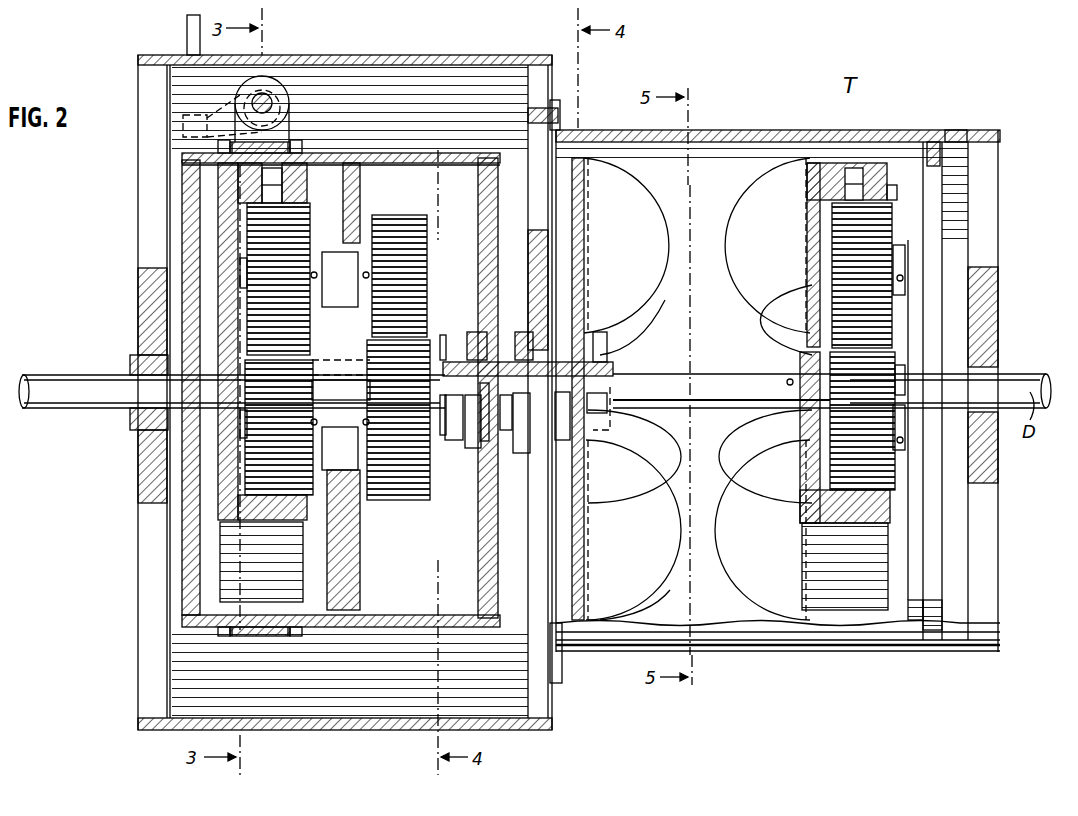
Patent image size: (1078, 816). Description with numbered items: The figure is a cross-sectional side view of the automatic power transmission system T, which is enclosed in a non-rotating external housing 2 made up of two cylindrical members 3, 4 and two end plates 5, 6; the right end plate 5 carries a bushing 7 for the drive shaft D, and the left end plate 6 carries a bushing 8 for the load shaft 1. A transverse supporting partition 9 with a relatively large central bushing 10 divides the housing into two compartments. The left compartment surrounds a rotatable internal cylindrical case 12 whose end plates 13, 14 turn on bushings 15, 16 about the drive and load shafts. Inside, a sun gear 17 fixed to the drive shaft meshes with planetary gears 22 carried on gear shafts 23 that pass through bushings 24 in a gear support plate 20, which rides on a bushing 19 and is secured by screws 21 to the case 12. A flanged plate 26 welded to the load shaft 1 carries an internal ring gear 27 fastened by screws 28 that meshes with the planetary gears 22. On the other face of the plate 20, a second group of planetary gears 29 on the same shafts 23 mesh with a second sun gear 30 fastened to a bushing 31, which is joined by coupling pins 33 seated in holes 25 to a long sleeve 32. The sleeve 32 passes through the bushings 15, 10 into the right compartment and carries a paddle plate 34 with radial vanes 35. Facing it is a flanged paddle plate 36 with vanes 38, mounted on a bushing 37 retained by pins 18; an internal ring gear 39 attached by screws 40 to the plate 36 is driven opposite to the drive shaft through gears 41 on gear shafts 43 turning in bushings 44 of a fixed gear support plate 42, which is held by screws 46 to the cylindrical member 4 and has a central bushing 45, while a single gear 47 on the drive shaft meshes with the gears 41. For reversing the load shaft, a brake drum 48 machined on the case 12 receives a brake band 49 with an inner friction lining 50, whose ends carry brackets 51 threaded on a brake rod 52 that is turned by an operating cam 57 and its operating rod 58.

The load shaft 1 is at (50, 375).
The external housing 2 is at (560, 700).
The cylindrical member 3 is at (446, 55).
The cylindrical member 4 is at (764, 132).
The right end plate 5 is at (994, 312).
The left end plate 6 is at (150, 291).
The bushing 7 is at (1012, 368).
The bushing 8 is at (130, 362).
The transverse supporting partition 9 is at (530, 262).
The bushing 10 is at (520, 458).
The internal cylindrical case 12 is at (456, 160).
The right end plate 13 is at (490, 252).
The left end plate 14 is at (186, 512).
The bushing 15 is at (506, 355).
The bushing 16 is at (172, 428).
The sun gear 17 is at (322, 350).
The pins 18 is at (792, 428).
The bushing 19 is at (350, 358).
The gear support plate 20 is at (362, 582).
The screws 21 is at (376, 153).
The planetary gears 22 is at (300, 252).
The gear shafts 23 is at (246, 270).
The bushings 24 is at (340, 361).
The holes 25 is at (470, 345).
The flanged plate 26 is at (240, 232).
The internal ring gear 27 is at (232, 196).
The screws 28 is at (305, 192).
The planetary gears 29 is at (420, 252).
The second sun gear 30 is at (366, 384).
The bushing 31 is at (456, 407).
The sleeve 32 is at (524, 418).
The coupling pins 33 is at (448, 335).
The paddle plate 34 is at (582, 242).
The paddle blades 35 is at (668, 312).
The flanged paddle plate 36 is at (830, 165).
The bushing 37 is at (796, 364).
The paddle blades 38 is at (704, 228).
The internal ring gear 39 is at (890, 192).
The screws 40 is at (866, 165).
The gears 41 is at (836, 232).
The gear support plate 42 is at (948, 172).
The gear shafts 43 is at (836, 284).
The bushings 44 is at (930, 252).
The bushing 45 is at (944, 366).
The screws 46 is at (940, 140).
The single gear 47 is at (842, 380).
The brake drum 48 is at (220, 146).
The brake band 49 is at (296, 146).
The inner friction lining 50 is at (268, 148).
The brackets 51 is at (280, 80).
The brake rod 52 is at (275, 108).
The operating cam 57 is at (182, 125).
The operating rod 58 is at (186, 42).